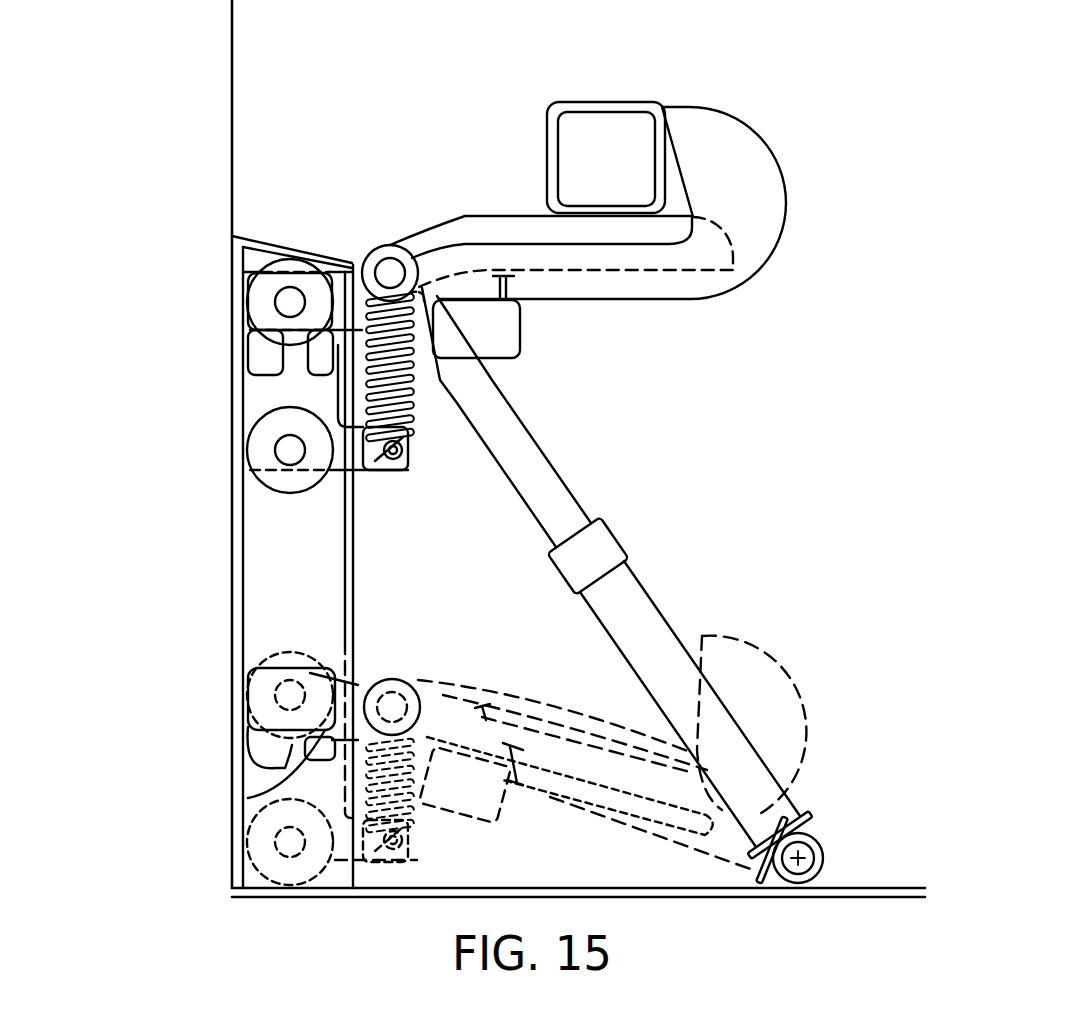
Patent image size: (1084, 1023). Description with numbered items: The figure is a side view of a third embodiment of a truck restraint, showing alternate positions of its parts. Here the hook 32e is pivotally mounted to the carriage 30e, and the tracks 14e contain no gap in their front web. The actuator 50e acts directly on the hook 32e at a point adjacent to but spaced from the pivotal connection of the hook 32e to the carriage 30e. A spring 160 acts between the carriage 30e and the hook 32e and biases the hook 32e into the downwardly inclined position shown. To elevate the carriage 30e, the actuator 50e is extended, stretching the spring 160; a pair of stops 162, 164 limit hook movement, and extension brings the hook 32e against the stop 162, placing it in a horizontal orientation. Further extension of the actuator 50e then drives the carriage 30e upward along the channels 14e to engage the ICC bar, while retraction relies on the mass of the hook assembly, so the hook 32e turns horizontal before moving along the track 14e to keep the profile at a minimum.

The tracks 14e is at (265, 580).
The carriage 30e is at (265, 396).
The hook 32e is at (740, 133).
The actuator 50e is at (662, 610).
The spring 160 is at (412, 388).
The stop 162 is at (252, 738).
The stop 164 is at (248, 798).